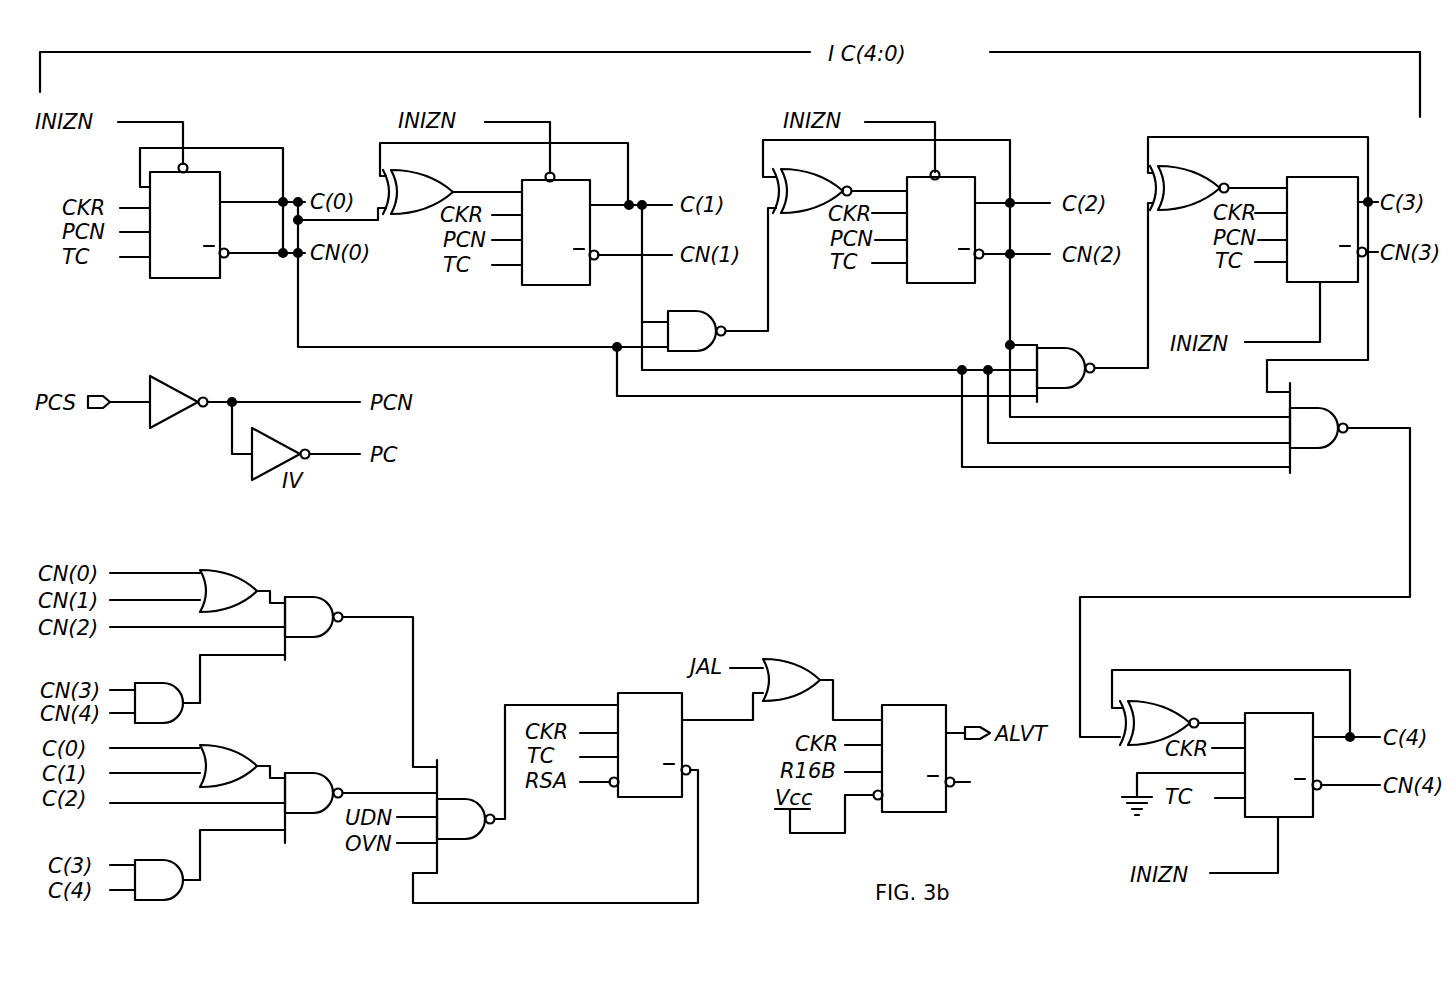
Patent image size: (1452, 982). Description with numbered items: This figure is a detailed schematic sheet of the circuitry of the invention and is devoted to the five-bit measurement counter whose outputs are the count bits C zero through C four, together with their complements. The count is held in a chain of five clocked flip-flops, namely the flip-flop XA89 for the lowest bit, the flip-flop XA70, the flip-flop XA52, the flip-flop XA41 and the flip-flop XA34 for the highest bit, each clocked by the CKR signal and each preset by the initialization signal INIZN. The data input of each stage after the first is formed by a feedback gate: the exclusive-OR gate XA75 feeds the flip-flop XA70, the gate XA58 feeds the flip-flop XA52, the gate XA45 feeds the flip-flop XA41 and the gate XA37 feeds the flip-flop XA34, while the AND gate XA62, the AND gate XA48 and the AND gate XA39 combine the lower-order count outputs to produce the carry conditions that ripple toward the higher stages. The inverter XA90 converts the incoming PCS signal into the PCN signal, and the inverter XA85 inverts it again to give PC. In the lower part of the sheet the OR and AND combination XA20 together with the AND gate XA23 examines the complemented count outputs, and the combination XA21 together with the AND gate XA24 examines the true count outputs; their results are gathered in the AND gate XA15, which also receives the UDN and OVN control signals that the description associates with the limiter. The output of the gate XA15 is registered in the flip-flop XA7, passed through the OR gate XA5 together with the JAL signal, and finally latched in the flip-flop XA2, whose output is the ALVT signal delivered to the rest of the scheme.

The flip-flop (bit 0) XA89 is at (215, 221).
The exclusive-OR gate XA75 is at (504, 178).
The flip-flop (bit 1) XA70 is at (587, 229).
The AND gate XA62 is at (695, 317).
The exclusive-NOR gate XA58 is at (886, 176).
The flip-flop (bit 2) XA52 is at (972, 227).
The AND gate XA48 is at (1067, 361).
The exclusive-NOR gate XA45 is at (1258, 264).
The flip-flop (bit 3) XA41 is at (1327, 216).
The AND gate XA39 is at (1321, 428).
The inverter XA90 is at (186, 393).
The inverter XA85 is at (288, 444).
The OR-AND gate XA20 is at (271, 609).
The AND gate XA23 is at (162, 691).
The OR-AND gate XA21 is at (271, 791).
The AND gate XA24 is at (167, 869).
The AND gate XA15 is at (466, 816).
The flip-flop XA7 is at (650, 732).
The OR gate XA5 is at (791, 669).
The flip-flop XA2 is at (914, 745).
The exclusive-NOR gate XA37 is at (1231, 707).
The flip-flop (bit 4) XA34 is at (1284, 753).